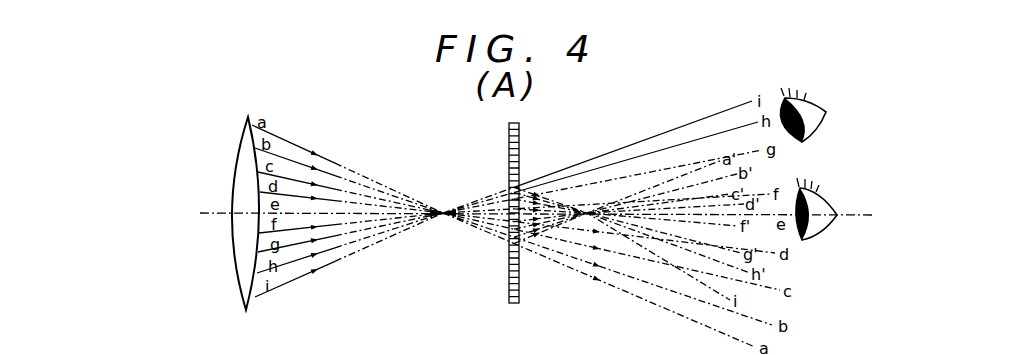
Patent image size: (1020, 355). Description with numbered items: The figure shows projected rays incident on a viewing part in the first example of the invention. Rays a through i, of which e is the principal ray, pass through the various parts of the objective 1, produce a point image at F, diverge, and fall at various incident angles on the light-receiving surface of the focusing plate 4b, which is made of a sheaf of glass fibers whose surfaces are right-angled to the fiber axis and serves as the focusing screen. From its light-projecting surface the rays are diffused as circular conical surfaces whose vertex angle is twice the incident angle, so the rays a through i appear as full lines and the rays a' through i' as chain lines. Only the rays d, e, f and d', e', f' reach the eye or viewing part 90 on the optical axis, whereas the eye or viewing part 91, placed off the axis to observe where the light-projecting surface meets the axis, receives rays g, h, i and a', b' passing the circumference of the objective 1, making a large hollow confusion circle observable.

The objective 1 is at (246, 143).
The focusing plate 4b is at (519, 129).
The point image F is at (443, 227).
The eye or viewing part 91 is at (810, 108).
The eye or viewing part 90 is at (816, 212).